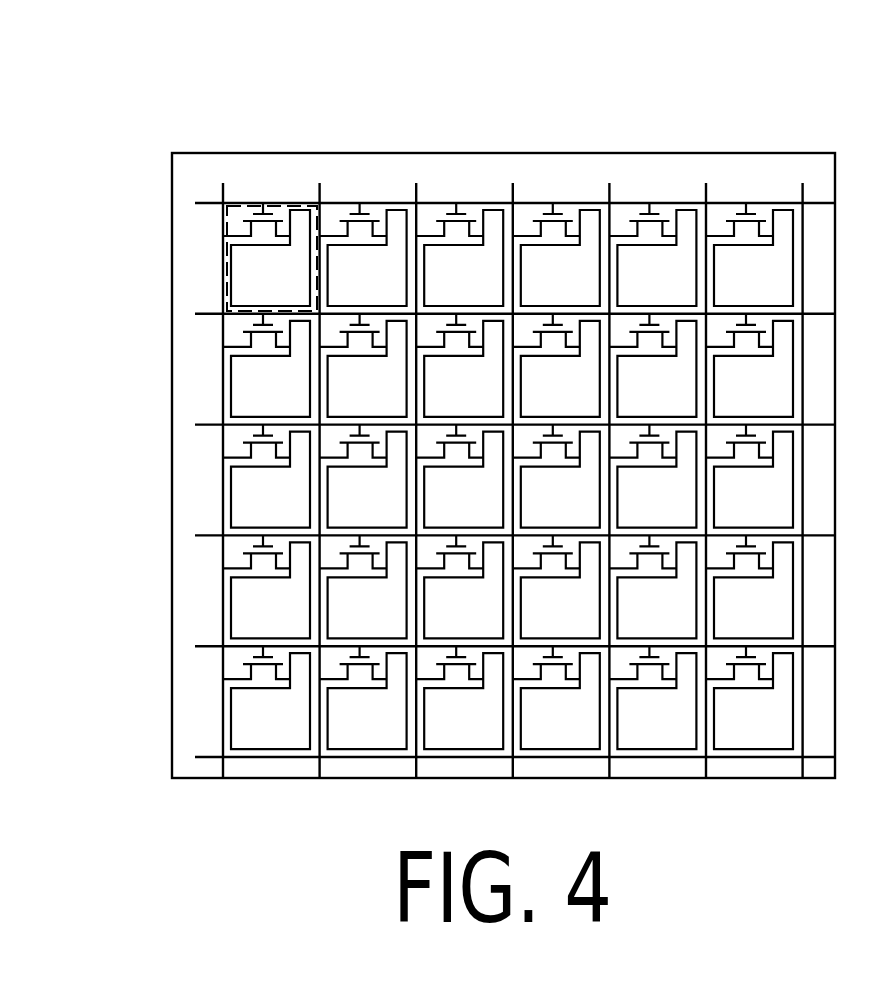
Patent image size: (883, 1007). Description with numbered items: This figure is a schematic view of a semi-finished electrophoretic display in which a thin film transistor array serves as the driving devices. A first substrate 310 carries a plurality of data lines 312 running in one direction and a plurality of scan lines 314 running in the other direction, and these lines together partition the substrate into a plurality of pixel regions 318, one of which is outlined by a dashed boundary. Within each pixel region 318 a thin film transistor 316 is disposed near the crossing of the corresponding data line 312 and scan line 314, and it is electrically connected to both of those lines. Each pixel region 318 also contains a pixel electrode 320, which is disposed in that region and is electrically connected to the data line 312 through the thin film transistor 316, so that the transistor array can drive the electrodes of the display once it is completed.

The first substrate 310 is at (790, 167).
The data line 312 is at (222, 192).
The scan line 314 is at (203, 205).
The thin film transistor 316 is at (285, 212).
The pixel region 318 is at (318, 223).
The pixel electrode 320 is at (240, 292).